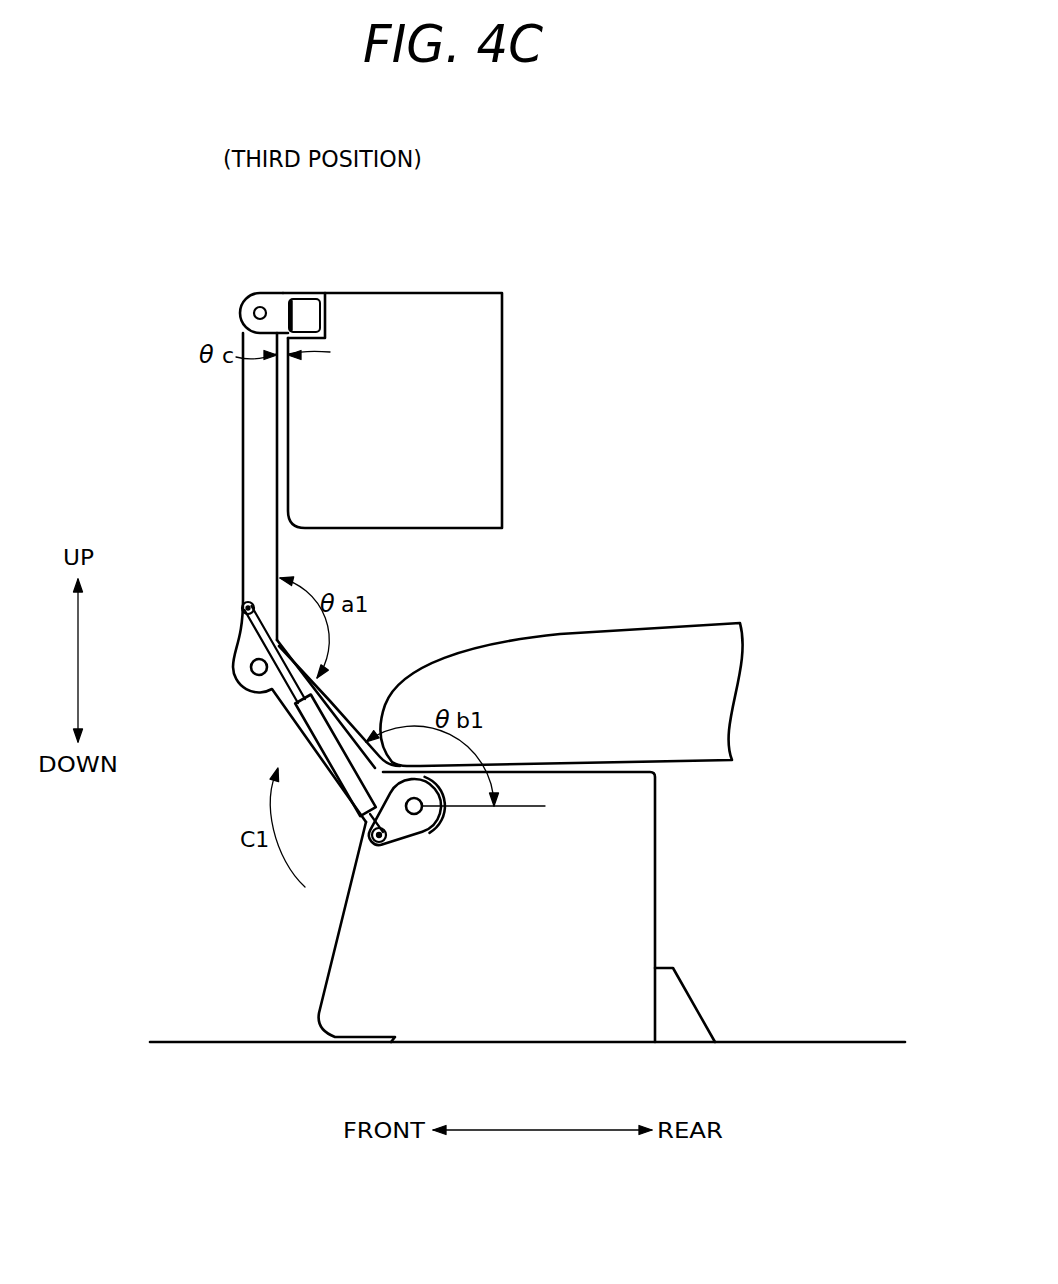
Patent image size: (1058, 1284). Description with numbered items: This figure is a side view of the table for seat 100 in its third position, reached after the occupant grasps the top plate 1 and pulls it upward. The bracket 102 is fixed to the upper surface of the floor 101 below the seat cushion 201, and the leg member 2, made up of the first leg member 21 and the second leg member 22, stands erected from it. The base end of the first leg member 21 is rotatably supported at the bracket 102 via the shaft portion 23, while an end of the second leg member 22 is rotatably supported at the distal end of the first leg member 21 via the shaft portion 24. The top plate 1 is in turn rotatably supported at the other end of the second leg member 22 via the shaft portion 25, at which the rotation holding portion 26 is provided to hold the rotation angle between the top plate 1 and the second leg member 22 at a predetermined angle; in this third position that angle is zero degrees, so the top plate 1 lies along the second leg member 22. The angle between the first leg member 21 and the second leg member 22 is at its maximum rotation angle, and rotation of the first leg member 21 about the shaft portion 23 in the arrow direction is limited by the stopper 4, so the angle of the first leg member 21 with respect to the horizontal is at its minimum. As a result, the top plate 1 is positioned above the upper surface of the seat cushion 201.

The table for seat 100 is at (184, 256).
The top plate 1 is at (458, 292).
The leg member 2 is at (236, 566).
The stopper 4 is at (437, 834).
The first leg member 21 is at (334, 703).
The second leg member 22 is at (242, 452).
The shaft portion 23 is at (373, 832).
The shaft portion 24 is at (251, 667).
The shaft portion 25 is at (251, 304).
The rotation holding portion 26 is at (282, 283).
The floor 101 is at (190, 1041).
The bracket 102 is at (657, 835).
The seat cushion 201 is at (728, 670).